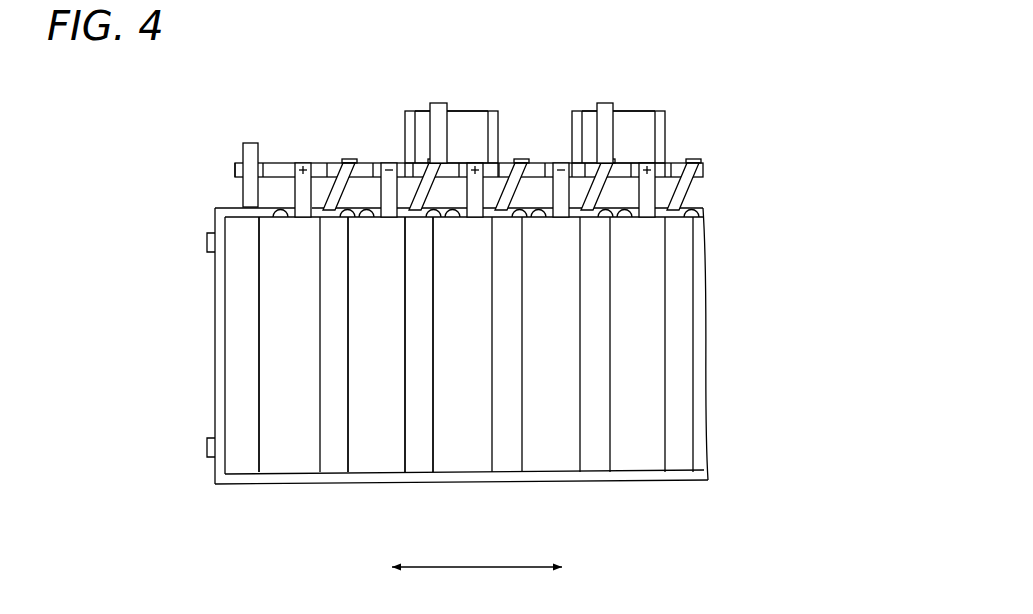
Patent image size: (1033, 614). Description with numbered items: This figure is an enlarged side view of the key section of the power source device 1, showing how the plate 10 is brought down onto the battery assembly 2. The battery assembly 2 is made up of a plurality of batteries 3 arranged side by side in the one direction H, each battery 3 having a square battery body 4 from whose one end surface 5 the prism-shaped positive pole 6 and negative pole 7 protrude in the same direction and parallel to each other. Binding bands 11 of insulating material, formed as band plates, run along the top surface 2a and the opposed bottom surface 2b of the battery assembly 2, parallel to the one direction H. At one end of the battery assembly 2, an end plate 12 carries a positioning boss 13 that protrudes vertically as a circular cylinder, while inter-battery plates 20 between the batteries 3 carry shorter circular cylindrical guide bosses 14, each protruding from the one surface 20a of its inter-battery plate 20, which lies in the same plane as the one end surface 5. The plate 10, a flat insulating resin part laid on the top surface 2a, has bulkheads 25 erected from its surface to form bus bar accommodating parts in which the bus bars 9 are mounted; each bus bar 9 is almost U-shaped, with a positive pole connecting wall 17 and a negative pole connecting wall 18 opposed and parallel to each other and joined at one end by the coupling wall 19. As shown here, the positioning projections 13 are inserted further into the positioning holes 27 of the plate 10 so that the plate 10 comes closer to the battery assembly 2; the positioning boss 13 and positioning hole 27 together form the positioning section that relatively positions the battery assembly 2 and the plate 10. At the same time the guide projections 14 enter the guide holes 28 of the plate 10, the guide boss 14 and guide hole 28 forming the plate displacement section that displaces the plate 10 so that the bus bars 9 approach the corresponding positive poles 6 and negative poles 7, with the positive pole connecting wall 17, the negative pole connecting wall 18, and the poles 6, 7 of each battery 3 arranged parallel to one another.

The power source device 1 is at (192, 73).
The battery assembly 2 is at (198, 226).
The top surface 2a is at (362, 217).
The bottom surface 2b is at (374, 483).
The battery 3 is at (313, 480).
The battery body 4 is at (442, 453).
The one end surface 5 is at (278, 218).
The positive pole 6 is at (305, 218).
The negative pole 7 is at (390, 218).
The bus bar 9 is at (488, 110).
The plate 10 is at (546, 160).
The binding band 11 is at (233, 207).
The end plate 12 is at (242, 335).
The positioning boss 13 is at (252, 143).
The guide boss 14 is at (331, 212).
The positive pole connecting wall 17 is at (496, 130).
The negative pole connecting wall 18 is at (412, 132).
The coupling wall 19 is at (466, 112).
The inter-battery plate 20 is at (342, 382).
The one surface 20a is at (353, 218).
The bulkhead 25 is at (438, 103).
The positioning hole 27 is at (243, 160).
The guide hole 28 is at (340, 159).
The one direction H is at (457, 570).